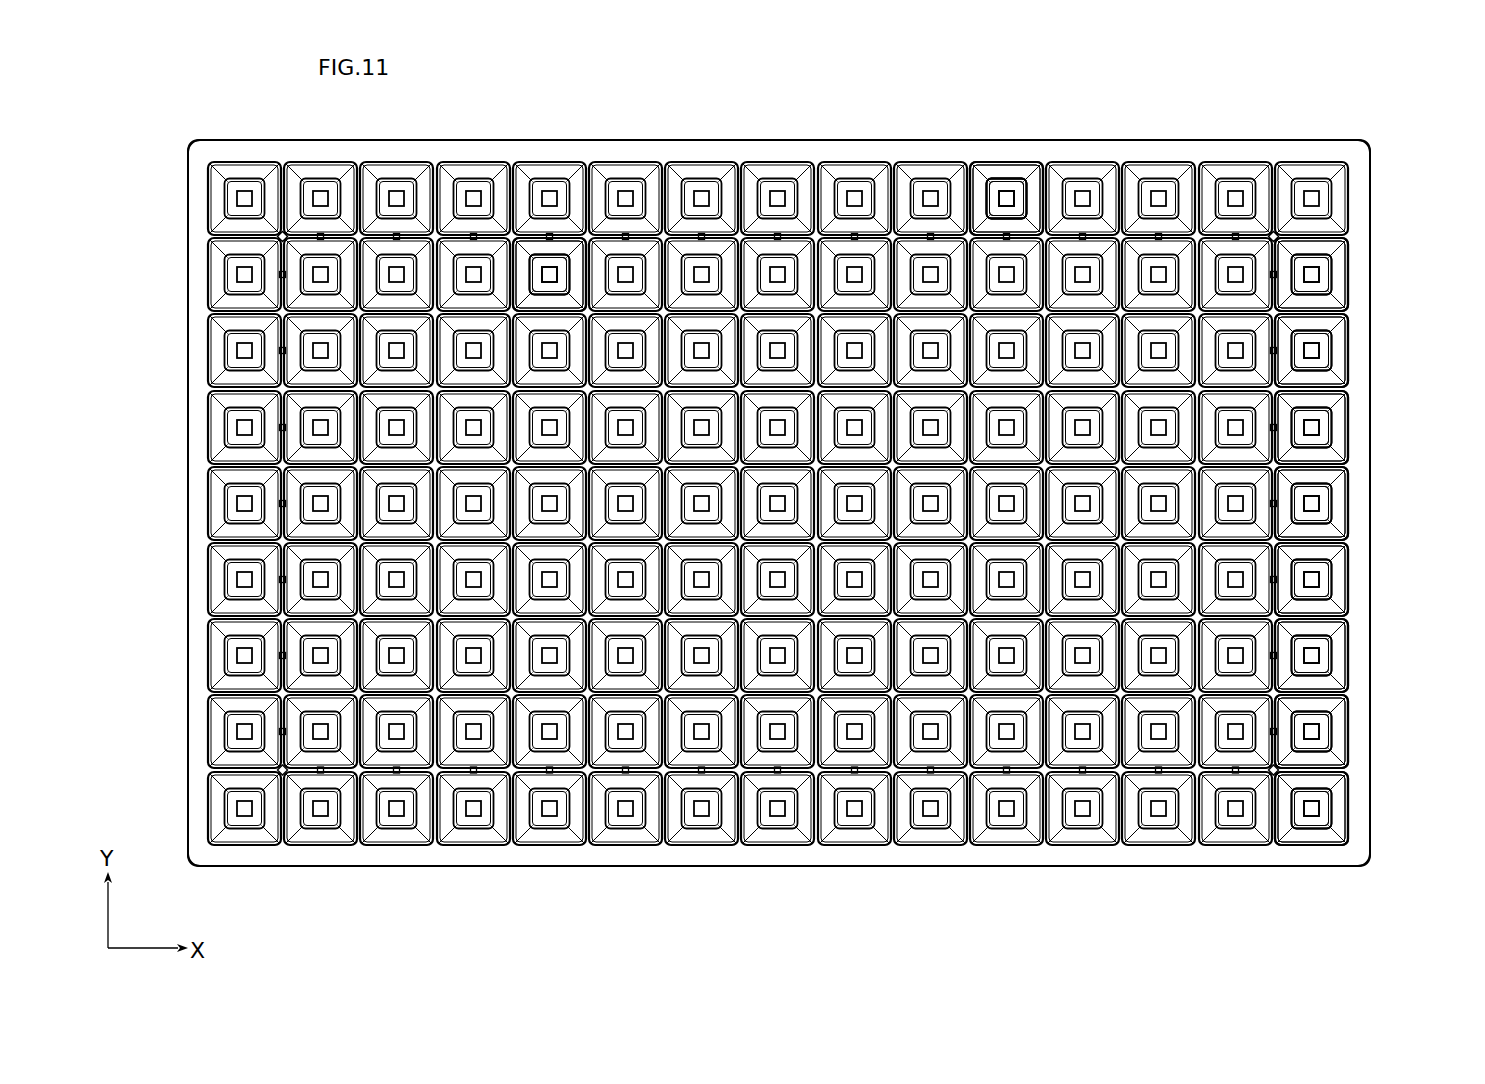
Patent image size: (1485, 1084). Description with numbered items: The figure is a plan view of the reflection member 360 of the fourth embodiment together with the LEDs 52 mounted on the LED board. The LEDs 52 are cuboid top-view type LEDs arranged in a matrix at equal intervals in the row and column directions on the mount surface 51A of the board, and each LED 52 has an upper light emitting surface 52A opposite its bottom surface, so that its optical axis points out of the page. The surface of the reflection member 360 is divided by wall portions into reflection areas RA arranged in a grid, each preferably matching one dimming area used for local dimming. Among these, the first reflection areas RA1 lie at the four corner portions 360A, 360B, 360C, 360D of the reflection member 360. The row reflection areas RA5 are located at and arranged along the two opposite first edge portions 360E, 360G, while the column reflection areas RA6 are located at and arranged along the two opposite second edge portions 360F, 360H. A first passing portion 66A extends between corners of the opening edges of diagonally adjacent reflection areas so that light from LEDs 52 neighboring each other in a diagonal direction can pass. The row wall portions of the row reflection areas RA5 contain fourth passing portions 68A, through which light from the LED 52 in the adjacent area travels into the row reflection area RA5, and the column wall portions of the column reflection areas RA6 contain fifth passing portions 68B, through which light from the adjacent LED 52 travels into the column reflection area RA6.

The reflection member 360 is at (1243, 106).
The corner portion 360A is at (1368, 866).
The corner portion 360B is at (188, 866).
The corner portion 360C is at (188, 141).
The corner portion 360D is at (1368, 140).
The first edge portion 360E is at (233, 867).
The second edge portion 360F is at (188, 478).
The first edge portion 360G is at (727, 140).
The second edge portion 360H is at (1370, 216).
The LED 52 is at (999, 197).
The mount surface 51A is at (1008, 189).
The light emitting surface 52A is at (1015, 197).
The reflection area RA is at (578, 273).
The first reflection area RA1 is at (1318, 836).
The row reflection area RA5 is at (1308, 840).
The column reflection area RA6 is at (1347, 278).
The fourth passing portion 68A is at (1237, 776).
The fifth passing portion 68B is at (1277, 734).
The first passing portion 66A is at (1276, 772).